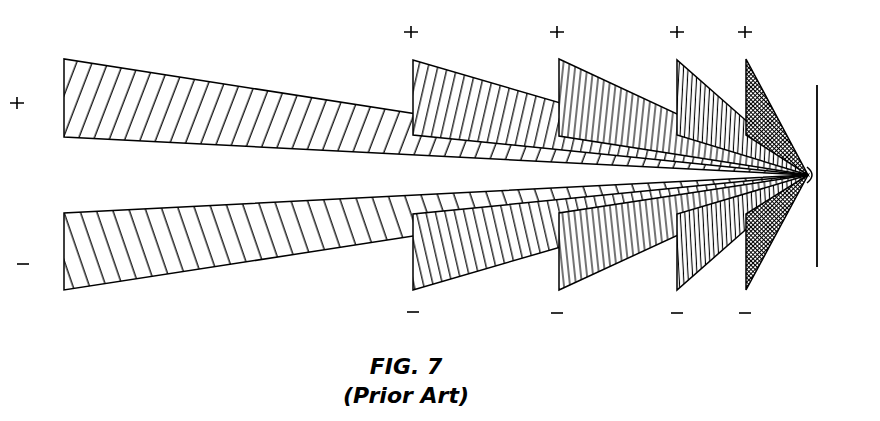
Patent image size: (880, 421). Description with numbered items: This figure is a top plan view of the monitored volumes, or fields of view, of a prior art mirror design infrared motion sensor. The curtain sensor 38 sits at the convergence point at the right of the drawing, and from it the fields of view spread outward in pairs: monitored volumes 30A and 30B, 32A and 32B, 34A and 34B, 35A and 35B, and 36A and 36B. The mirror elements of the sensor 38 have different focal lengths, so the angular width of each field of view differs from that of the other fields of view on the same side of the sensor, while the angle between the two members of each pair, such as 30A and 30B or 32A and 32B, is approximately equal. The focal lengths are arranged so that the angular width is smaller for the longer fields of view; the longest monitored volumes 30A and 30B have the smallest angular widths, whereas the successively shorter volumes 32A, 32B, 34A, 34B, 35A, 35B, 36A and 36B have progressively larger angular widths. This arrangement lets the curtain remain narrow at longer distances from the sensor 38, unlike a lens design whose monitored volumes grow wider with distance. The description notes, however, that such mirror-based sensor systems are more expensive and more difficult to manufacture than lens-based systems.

The monitored volume 30A is at (120, 122).
The monitored volume 30B is at (83, 225).
The monitored volume 32A is at (423, 88).
The monitored volume 32B is at (423, 273).
The monitored volume 34A is at (567, 83).
The monitored volume 34B is at (567, 268).
The monitored volume 35A is at (678, 83).
The monitored volume 35B is at (678, 268).
The monitored volume 36A is at (760, 77).
The monitored volume 36B is at (760, 267).
The mirror design curtain sensor 38 is at (806, 158).